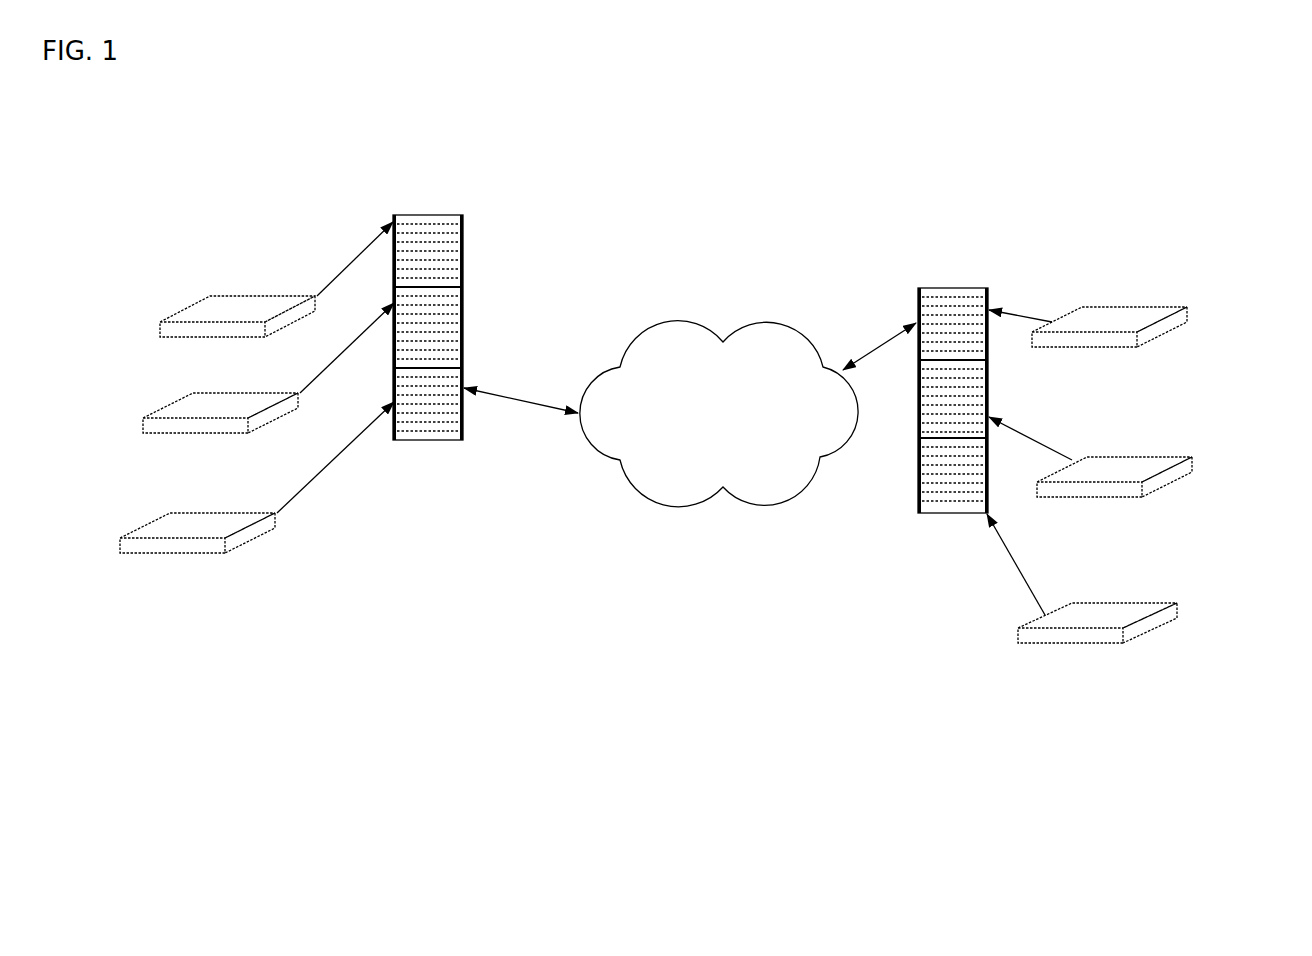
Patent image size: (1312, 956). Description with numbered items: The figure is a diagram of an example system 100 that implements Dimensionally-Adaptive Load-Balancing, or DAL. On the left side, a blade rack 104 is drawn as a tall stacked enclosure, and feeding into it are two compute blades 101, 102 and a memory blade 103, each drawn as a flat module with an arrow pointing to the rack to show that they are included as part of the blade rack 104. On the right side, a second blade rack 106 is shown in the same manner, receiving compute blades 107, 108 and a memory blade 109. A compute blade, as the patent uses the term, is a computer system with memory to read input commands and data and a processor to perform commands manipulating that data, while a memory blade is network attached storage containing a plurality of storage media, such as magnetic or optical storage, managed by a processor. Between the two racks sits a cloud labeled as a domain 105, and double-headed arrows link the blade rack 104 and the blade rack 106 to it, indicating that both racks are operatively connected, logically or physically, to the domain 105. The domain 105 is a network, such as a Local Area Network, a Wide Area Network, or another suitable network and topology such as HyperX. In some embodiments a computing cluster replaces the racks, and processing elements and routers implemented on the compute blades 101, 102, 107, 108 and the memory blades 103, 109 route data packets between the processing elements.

The system 100 is at (1301, 100).
The compute blade 101 is at (246, 295).
The compute blade 102 is at (182, 400).
The memory blade 103 is at (122, 538).
The blade rack 104 is at (431, 213).
The domain 105 is at (680, 322).
The blade rack 106 is at (952, 288).
The compute blade 107 is at (1187, 308).
The compute blade 108 is at (1192, 457).
The memory blade 109 is at (1176, 606).